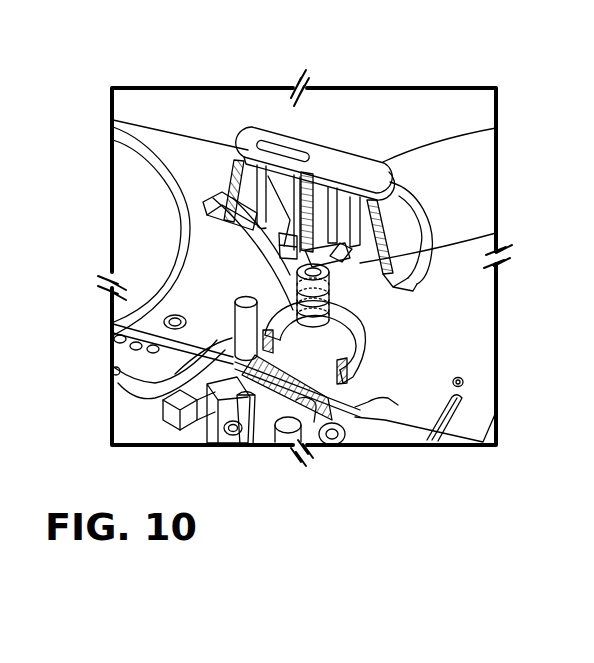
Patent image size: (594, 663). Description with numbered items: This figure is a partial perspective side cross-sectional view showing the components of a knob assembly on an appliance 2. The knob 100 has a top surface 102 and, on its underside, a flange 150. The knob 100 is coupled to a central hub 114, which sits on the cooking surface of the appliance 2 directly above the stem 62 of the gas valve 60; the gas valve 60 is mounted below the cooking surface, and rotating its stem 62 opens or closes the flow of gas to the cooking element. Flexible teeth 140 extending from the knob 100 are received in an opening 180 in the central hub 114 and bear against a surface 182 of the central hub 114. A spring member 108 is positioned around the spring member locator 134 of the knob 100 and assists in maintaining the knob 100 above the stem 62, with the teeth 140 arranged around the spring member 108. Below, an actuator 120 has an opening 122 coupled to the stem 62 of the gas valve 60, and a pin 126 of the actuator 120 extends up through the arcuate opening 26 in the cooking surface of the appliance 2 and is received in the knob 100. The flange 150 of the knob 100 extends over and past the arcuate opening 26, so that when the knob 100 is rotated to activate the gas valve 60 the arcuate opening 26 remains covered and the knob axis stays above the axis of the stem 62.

The appliance 2 is at (181, 150).
The flange 150 is at (218, 197).
The top surface 102 is at (372, 178).
The knob 100 is at (392, 217).
The spring member locator 134 is at (407, 183).
The teeth 140 is at (283, 252).
The opening 180 is at (305, 275).
The surface 182 is at (300, 287).
The spring member 108 is at (340, 300).
The central hub 114 is at (367, 362).
The pin 126 is at (116, 385).
The arcuate opening 26 is at (398, 404).
The actuator 120 is at (278, 432).
The opening 122 is at (310, 432).
The gas valve 60 is at (340, 430).
The stem 62 is at (363, 430).